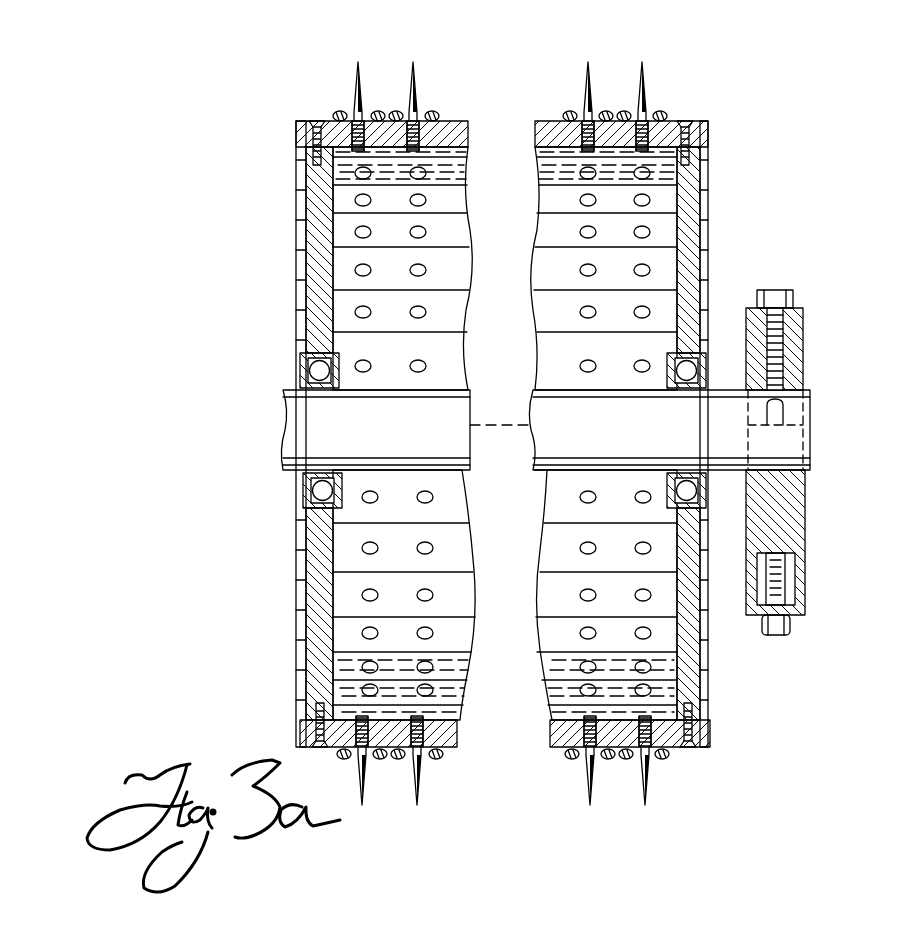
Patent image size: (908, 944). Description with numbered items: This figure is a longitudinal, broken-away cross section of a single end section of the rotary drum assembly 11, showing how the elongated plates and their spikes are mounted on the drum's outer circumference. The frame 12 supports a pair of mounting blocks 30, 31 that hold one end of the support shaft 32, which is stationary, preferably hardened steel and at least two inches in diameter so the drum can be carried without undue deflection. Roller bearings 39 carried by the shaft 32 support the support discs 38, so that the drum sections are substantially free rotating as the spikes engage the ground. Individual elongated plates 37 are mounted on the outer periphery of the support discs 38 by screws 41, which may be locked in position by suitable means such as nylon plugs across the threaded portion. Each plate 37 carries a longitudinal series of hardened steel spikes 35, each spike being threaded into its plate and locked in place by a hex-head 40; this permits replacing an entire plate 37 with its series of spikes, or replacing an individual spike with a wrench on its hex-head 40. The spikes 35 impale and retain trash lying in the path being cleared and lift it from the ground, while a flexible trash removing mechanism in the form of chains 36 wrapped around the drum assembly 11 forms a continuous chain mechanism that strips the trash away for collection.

The drum assembly 11 is at (716, 214).
The frame 12 is at (803, 596).
The mounting block 30 is at (806, 530).
The mounting block 31 is at (804, 342).
The support shaft 32 is at (302, 458).
The spikes 35 is at (646, 82).
The chains 36 is at (432, 112).
The elongated plate 37 is at (457, 121).
The support disc 38 is at (306, 222).
The roller bearing 39 is at (300, 366).
The hex-head 40 is at (352, 118).
The screws 41 is at (317, 121).